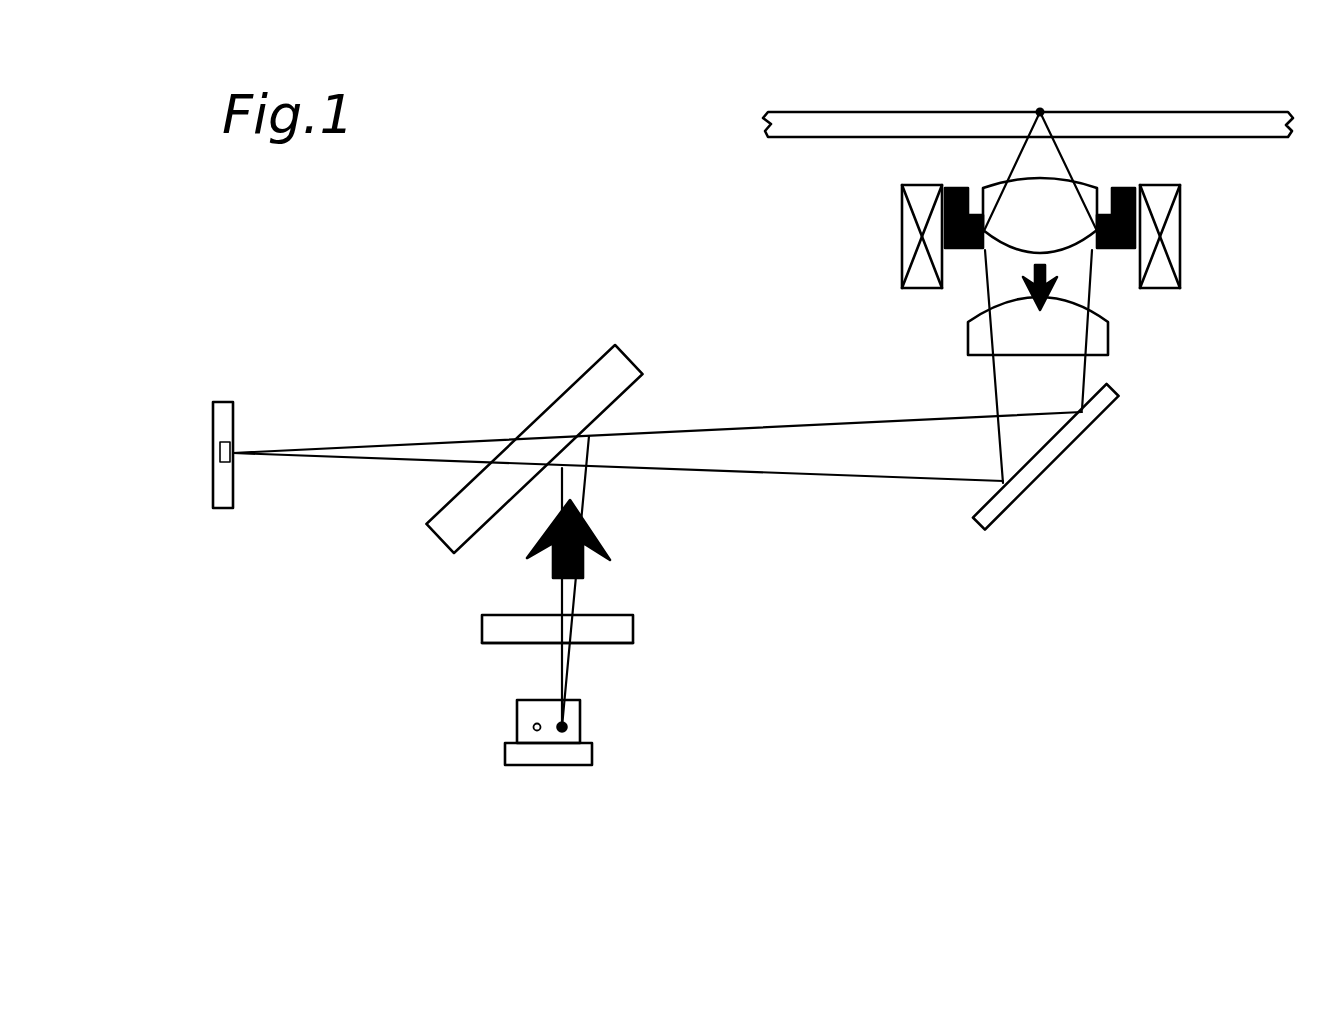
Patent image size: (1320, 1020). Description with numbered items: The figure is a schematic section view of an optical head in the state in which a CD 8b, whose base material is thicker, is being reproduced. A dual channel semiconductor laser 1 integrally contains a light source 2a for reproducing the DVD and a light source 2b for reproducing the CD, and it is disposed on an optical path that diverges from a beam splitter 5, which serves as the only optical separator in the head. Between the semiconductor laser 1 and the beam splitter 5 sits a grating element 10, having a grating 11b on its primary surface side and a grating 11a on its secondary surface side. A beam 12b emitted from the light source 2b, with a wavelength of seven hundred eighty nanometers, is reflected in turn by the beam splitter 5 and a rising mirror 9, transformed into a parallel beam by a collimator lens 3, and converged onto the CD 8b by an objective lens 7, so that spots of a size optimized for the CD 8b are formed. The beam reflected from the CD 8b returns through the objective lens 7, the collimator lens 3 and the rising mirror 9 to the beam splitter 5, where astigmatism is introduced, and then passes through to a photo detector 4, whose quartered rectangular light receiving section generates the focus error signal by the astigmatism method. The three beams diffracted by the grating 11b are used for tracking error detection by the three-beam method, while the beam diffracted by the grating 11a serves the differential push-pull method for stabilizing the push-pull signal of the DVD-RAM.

The dual channel semiconductor laser 1 is at (540, 765).
The light source for reproducing the DVD 2a is at (533, 730).
The light source for reproducing the CD 2b is at (566, 725).
The collimator lens 3 is at (1110, 330).
The photo detector 4 is at (237, 413).
The beam splitter 5 is at (585, 372).
The objective lens 7 is at (987, 193).
The CD 8b is at (798, 112).
The rising mirror 9 is at (1082, 442).
The grating element 10 is at (535, 647).
The grating 11a is at (490, 615).
The grating 11b is at (497, 643).
The beam 12b is at (602, 540).